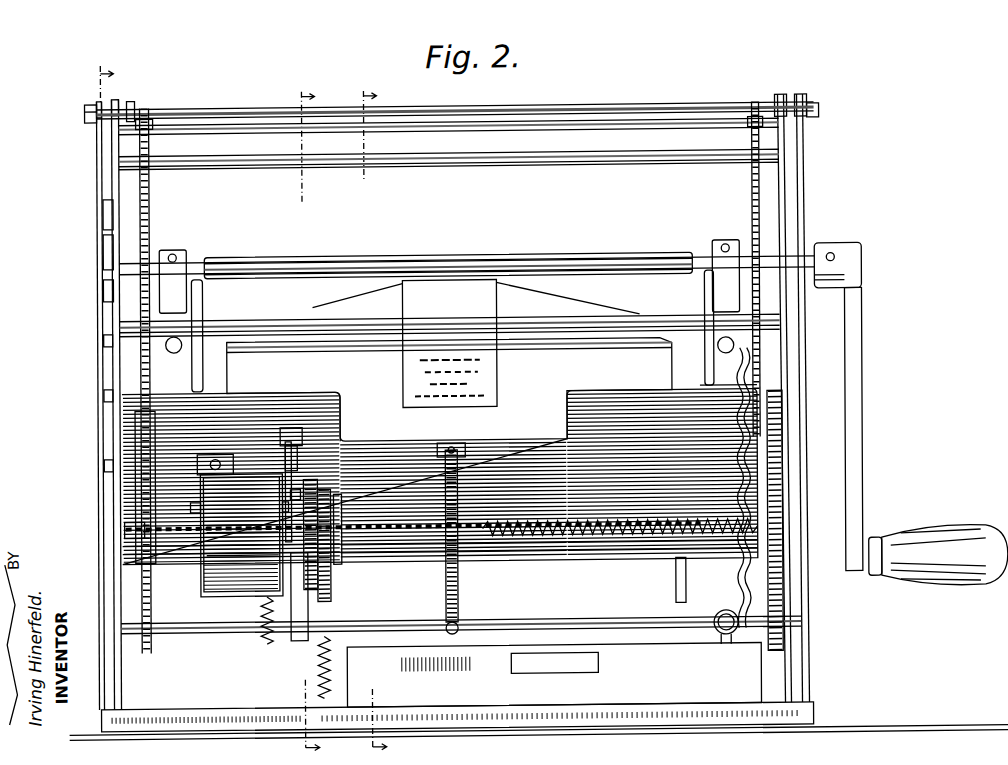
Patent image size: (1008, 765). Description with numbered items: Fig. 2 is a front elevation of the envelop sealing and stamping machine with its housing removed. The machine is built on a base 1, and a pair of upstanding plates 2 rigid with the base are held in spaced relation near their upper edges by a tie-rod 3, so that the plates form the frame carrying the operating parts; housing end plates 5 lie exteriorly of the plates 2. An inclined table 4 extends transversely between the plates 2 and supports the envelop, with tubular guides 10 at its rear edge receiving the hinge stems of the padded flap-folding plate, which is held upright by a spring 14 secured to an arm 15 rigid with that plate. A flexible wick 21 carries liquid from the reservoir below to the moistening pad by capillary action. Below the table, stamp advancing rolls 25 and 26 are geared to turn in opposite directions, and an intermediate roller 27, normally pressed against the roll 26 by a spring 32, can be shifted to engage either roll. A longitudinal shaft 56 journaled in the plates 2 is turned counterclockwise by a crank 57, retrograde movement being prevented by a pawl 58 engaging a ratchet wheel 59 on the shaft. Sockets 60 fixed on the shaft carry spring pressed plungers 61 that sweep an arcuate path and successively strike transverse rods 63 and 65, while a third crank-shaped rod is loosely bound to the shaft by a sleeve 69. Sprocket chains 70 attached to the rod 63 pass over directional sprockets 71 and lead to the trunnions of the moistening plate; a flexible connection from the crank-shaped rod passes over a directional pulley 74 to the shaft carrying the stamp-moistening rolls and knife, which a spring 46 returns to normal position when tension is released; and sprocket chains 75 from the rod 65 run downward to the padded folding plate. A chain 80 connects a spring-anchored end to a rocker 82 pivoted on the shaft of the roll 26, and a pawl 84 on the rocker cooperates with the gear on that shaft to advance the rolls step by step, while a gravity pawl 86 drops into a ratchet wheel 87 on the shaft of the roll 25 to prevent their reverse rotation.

The base 1 is at (800, 718).
The plates 2 is at (121, 578).
The spacing or tie-rod 3 is at (646, 96).
The inclined table 4 is at (638, 551).
The plates 5 is at (806, 522).
The tubular guides 10 is at (688, 584).
The spring 14 is at (470, 571).
The arm 15 is at (458, 595).
The flexible wick 21 is at (735, 592).
The roll 25 is at (215, 483).
The roll 26 is at (233, 556).
The intermediate roller 27 is at (220, 527).
The spring 32 is at (264, 636).
The spring 46 is at (582, 541).
The shaft 56 is at (816, 249).
The crank 57 is at (857, 402).
The dog or pawl 58 is at (104, 228).
The ratchet wheel 59 is at (104, 258).
The sockets 60 is at (186, 254).
The spring pressed plungers 61 is at (173, 350).
The rod 63 is at (458, 158).
The rod 65 is at (583, 322).
The sleeve 69 is at (303, 258).
The flexible connections 70 is at (150, 194).
The directional sprockets 71 is at (152, 134).
The directional pulley 74 is at (133, 524).
The flexible connections 75 is at (140, 354).
The chain 80 is at (320, 560).
The rocker 82 is at (332, 593).
The pawl 84 is at (311, 638).
The gravity pawl 86 is at (299, 426).
The ratchet wheel 87 is at (285, 480).